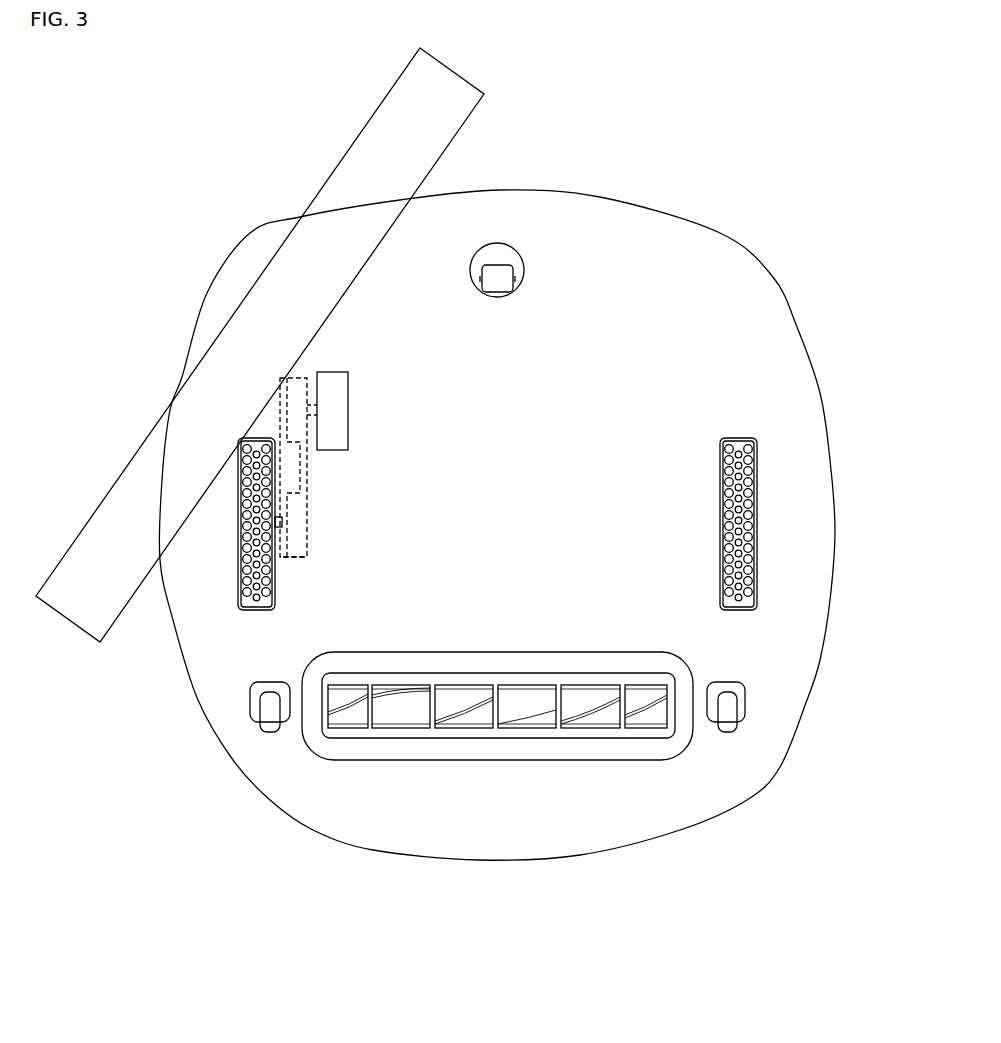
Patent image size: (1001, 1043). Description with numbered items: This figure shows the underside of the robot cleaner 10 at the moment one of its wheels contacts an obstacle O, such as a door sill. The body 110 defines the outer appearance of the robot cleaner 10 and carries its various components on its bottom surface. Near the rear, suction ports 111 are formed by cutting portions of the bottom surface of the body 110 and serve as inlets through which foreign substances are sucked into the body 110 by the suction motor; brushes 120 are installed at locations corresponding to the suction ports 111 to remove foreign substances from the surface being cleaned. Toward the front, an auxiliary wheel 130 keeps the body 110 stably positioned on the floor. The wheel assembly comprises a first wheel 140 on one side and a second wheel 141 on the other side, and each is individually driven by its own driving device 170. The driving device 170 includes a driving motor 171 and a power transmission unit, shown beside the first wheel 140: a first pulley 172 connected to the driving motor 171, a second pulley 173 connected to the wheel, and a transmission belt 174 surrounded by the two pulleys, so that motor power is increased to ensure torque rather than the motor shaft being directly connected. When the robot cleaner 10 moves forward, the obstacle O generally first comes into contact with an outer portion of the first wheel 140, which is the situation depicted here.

The obstacle O is at (370, 145).
The robot cleaner 10 is at (514, 488).
The body 110 is at (568, 200).
The suction ports 111 is at (402, 708).
The brushes 120 is at (497, 781).
The auxiliary wheel 130 is at (497, 247).
The first wheel 140 is at (251, 623).
The second wheel 141 is at (770, 570).
The driving device 170 is at (345, 455).
The driving motor 171 is at (343, 440).
The first pulley 172 is at (298, 394).
The second pulley 173 is at (296, 556).
The transmission belt 174 is at (302, 473).